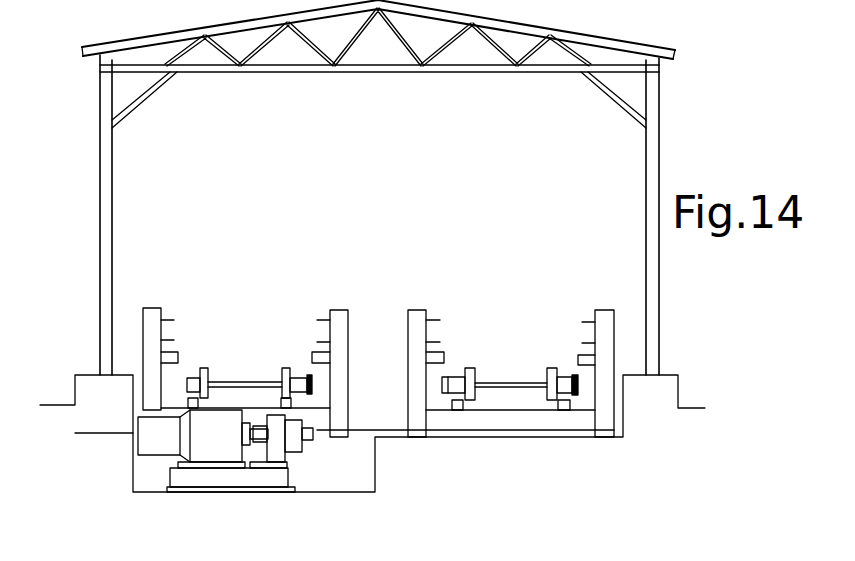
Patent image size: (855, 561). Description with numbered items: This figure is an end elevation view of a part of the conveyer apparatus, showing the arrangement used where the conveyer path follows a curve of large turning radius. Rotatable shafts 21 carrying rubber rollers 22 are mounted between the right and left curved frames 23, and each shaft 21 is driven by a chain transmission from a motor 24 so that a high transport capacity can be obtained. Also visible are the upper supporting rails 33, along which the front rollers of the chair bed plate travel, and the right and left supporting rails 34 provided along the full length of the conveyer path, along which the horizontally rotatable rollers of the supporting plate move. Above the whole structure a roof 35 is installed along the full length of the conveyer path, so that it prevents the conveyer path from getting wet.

The rotatable shaft 21 is at (223, 386).
The rubber roller 22 is at (285, 368).
The curved frame 23 is at (300, 403).
The motor 24 is at (227, 450).
The upper supporting rail 33 is at (172, 320).
The supporting rail 34 is at (177, 352).
The roof 35 is at (524, 17).